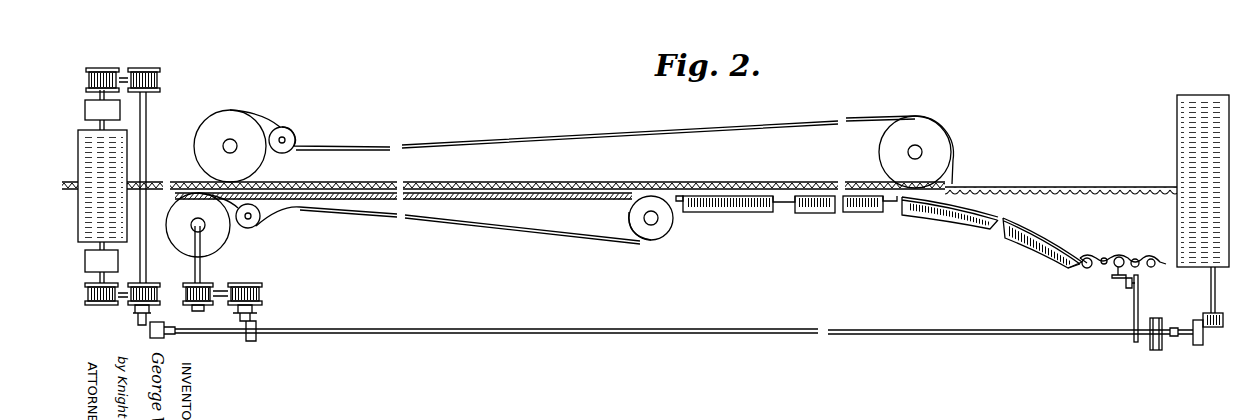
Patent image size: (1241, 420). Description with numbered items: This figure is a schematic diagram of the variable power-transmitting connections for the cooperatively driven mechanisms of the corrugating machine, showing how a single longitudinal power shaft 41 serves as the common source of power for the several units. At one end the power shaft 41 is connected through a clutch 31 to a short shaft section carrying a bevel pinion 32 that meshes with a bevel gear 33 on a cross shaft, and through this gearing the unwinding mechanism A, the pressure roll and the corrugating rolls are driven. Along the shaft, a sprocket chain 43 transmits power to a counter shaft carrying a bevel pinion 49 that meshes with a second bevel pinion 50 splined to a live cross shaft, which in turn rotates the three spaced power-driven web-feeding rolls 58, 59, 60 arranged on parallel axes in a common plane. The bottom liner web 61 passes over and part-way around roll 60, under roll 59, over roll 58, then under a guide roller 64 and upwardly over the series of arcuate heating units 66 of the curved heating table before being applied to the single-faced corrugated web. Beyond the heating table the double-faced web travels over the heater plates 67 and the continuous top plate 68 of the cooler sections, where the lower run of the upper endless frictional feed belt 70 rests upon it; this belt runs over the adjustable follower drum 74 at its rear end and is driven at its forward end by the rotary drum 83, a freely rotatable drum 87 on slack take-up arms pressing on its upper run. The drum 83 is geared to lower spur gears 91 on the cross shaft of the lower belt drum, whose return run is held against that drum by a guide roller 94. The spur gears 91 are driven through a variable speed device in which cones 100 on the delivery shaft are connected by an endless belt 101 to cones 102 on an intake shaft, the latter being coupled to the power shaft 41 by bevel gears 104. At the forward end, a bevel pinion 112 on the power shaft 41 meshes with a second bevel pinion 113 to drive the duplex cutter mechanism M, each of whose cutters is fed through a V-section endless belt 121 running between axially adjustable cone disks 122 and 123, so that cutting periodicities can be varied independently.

The mechanism A is at (1212, 92).
The duplex cutter mechanism M is at (138, 139).
The clutch 31 is at (1156, 350).
The bevel pinion 32 is at (1200, 346).
The bevel gear 33 is at (1217, 328).
The longitudinal power shaft 41 is at (224, 335).
The sprocket chain 43 is at (1139, 300).
The bevel pinion 49 is at (1128, 284).
The bevel pinion 50 is at (1115, 278).
The web-feeding roll 58 is at (1118, 256).
The web-feeding roll 59 is at (1135, 258).
The web-feeding roll 60 is at (1153, 258).
The bottom liner web 61 is at (1022, 228).
The guide roller 64 is at (1086, 256).
The arcuate heating units 66 is at (1032, 246).
The heater plate 67 is at (866, 212).
The top plate 68 is at (600, 197).
The upper endless frictional feed belt 70 is at (810, 192).
The follower drum 74 is at (938, 150).
The rotary drum 83 is at (224, 124).
The freely rotatable drum 87 is at (292, 128).
The lower spur gears 91 is at (226, 240).
The guide roller 94 is at (262, 218).
The axially spaced cones 100 is at (198, 311).
The endless belt 101 is at (214, 290).
The axially spaced cones 102 is at (258, 289).
The bevel gears 104 is at (248, 338).
The bevel pinion 112 is at (158, 324).
The bevel pinion 113 is at (138, 325).
The endless belt 121 is at (124, 70).
The cone disks 122 is at (104, 67).
The cone disks 123 is at (152, 70).